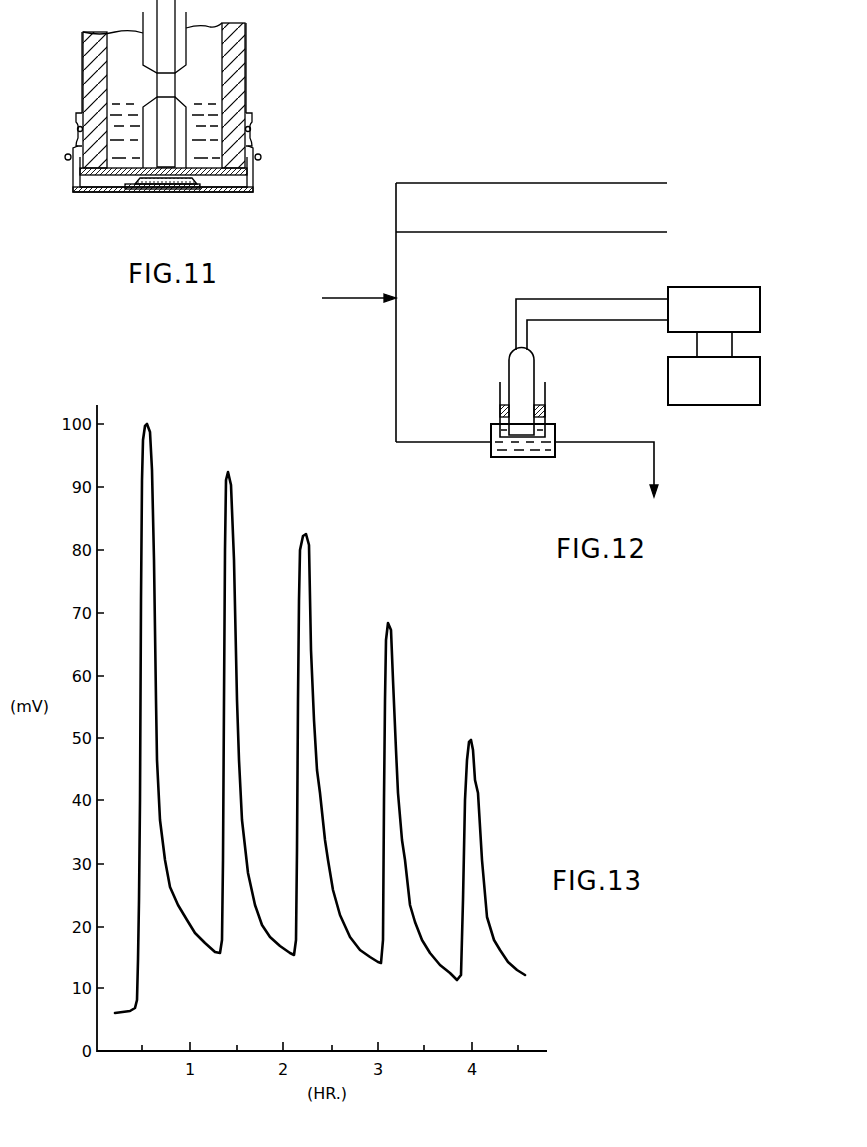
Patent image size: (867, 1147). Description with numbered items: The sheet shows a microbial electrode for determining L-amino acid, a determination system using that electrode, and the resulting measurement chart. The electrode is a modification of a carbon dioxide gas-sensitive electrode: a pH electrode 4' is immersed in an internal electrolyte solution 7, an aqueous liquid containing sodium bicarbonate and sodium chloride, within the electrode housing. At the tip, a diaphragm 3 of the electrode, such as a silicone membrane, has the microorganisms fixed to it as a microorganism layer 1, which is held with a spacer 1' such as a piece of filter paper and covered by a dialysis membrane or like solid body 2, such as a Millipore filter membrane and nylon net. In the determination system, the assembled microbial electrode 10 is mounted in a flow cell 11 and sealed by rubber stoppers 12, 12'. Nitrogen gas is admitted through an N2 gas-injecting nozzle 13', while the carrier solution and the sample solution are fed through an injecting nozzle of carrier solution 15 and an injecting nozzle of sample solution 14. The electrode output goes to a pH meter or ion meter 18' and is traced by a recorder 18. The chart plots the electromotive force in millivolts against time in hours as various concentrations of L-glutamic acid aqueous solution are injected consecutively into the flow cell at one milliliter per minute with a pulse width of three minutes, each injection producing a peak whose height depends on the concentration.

In FIG. 11, the microorganism layer 1 is at (166, 204).
In FIG. 11, the spacer 1' is at (158, 207).
In FIG. 11, the dialysis membrane or like solid body 2 is at (221, 197).
In FIG. 11, the diaphragm 3 is at (103, 178).
In FIG. 11, the pH electrode 4' is at (177, 84).
In FIG. 11, the internal electrolyte solution 7 is at (122, 110).
In FIG. 11, the microbial electrode 10 is at (248, 58).
In FIG. 12, the microbial electrode 10 is at (509, 367).
In FIG. 12, the flow cell 11 is at (548, 458).
In FIG. 12, the rubber stopper 12 is at (568, 406).
In FIG. 12, the rubber stopper 12' is at (480, 406).
In FIG. 12, the N2 gas-injecting nozzle 13' is at (359, 278).
In FIG. 12, the injecting nozzle of sample solution 14 is at (617, 232).
In FIG. 12, the injecting nozzle of carrier solution 15 is at (642, 183).
In FIG. 12, the recorder 18 is at (733, 368).
In FIG. 12, the pH meter or ion meter 18' is at (714, 287).